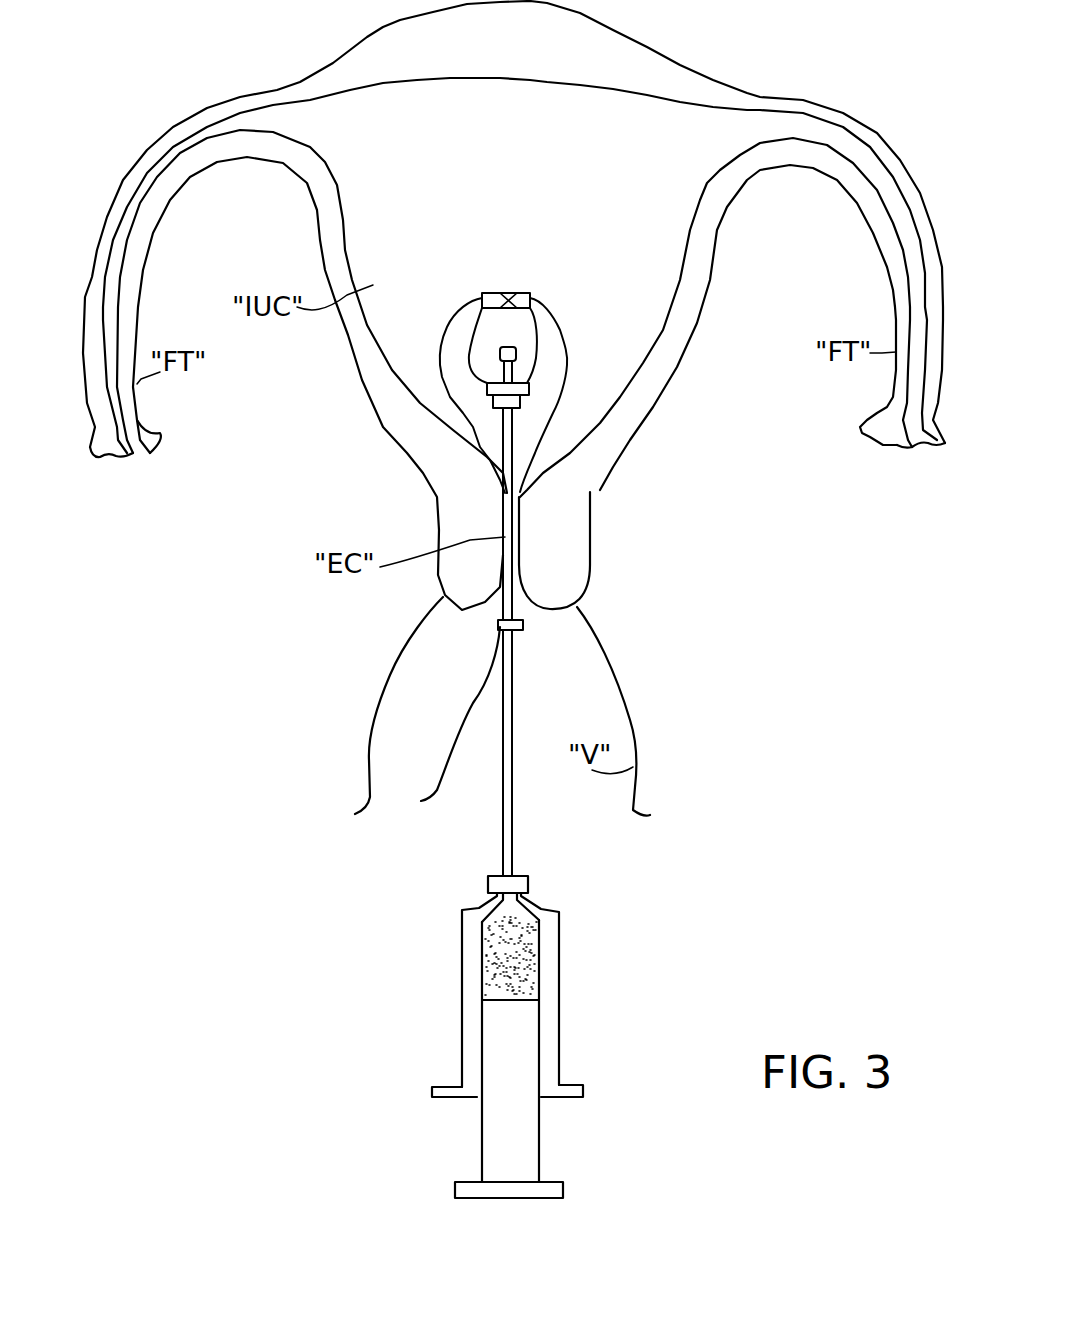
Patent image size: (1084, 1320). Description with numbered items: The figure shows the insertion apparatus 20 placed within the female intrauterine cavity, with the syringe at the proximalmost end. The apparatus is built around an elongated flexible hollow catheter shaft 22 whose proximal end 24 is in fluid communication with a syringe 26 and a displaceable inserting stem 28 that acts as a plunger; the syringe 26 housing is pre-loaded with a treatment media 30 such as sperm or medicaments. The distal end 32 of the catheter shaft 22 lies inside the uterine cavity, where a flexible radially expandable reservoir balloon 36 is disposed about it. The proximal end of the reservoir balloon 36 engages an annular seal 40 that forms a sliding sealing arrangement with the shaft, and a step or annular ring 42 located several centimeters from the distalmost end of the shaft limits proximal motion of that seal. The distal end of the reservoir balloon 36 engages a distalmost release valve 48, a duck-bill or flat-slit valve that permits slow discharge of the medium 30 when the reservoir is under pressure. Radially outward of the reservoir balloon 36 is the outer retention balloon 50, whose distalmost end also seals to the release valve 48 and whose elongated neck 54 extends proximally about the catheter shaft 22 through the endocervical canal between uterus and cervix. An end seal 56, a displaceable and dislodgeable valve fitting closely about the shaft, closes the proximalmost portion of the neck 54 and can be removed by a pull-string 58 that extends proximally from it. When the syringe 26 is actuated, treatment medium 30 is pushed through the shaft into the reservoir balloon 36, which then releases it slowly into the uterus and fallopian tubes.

The insertion apparatus 20 is at (540, 432).
The hollow catheter shaft 22 is at (513, 720).
The proximal end 24 is at (513, 876).
The syringe 26 is at (555, 948).
The inserting stem 28 is at (541, 1161).
The treatment media 30 is at (502, 960).
The distal end 32 is at (500, 369).
The reservoir balloon 36 is at (540, 338).
The annular seal 40 is at (527, 396).
The annular ring 42 is at (519, 407).
The release valve 48 is at (517, 292).
The retention balloon 50 is at (437, 362).
The elongated neck 54 is at (519, 497).
The end seal 56 is at (514, 630).
The pull-string 58 is at (452, 741).